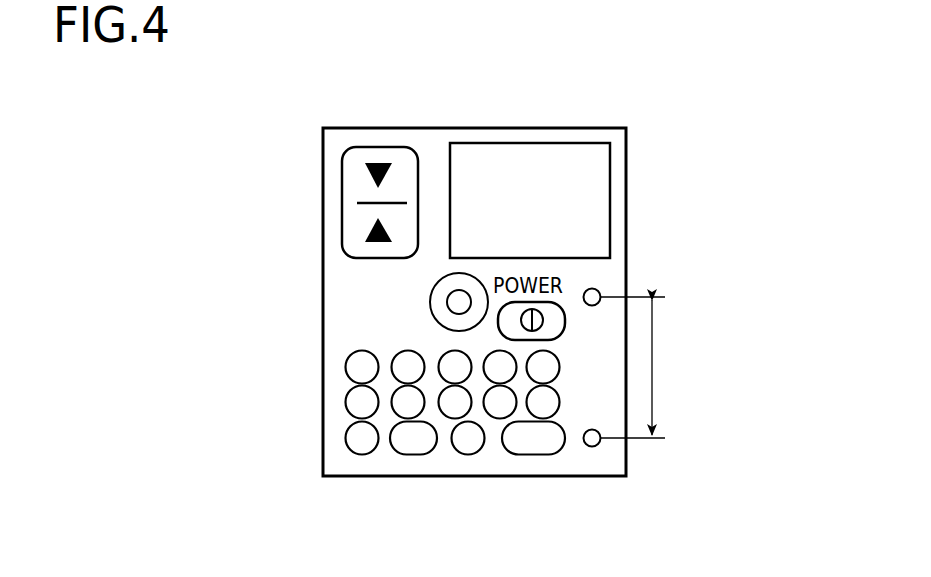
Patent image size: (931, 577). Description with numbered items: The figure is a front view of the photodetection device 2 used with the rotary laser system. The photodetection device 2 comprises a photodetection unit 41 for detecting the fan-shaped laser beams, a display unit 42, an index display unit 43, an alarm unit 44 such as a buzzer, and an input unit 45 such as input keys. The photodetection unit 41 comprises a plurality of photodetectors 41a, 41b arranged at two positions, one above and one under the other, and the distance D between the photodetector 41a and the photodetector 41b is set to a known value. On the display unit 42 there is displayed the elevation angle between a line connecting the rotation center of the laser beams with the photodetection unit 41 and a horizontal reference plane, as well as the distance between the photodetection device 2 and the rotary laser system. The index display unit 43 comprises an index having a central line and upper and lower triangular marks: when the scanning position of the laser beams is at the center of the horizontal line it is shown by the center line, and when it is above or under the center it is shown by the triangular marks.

The photodetection device 2 is at (318, 367).
The photodetection unit 41 is at (705, 328).
The photodetector 41a is at (600, 430).
The photodetector 41b is at (600, 291).
The display unit 42 is at (552, 143).
The index display unit 43 is at (385, 146).
The alarm unit 44 is at (430, 302).
The input unit 45 is at (449, 457).